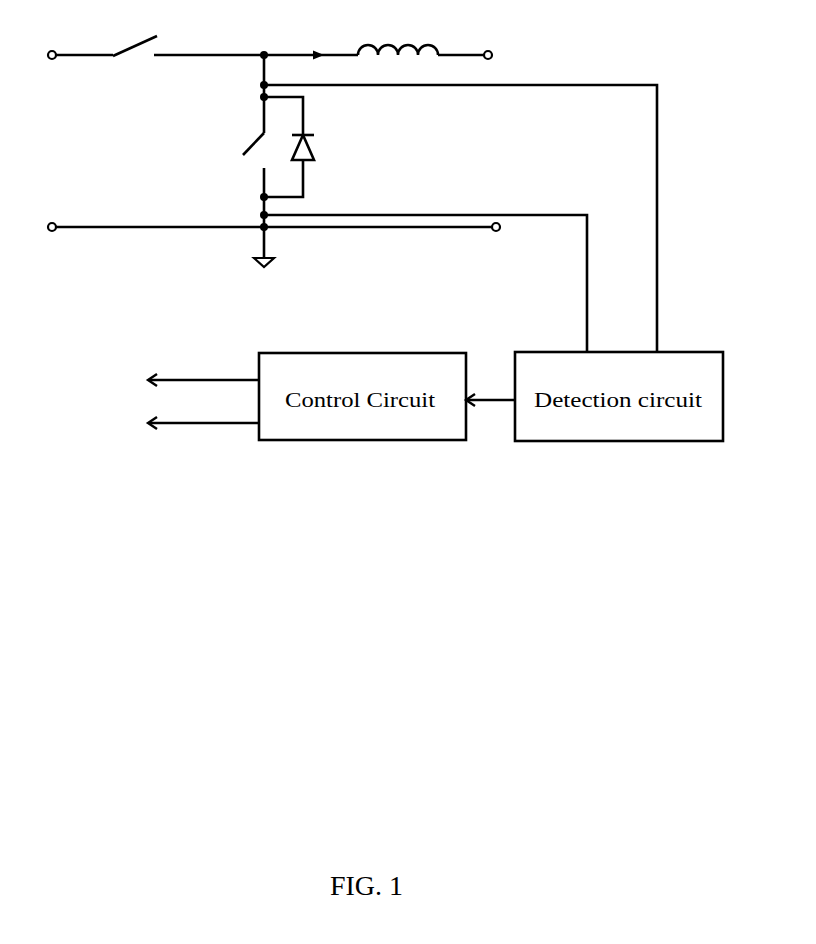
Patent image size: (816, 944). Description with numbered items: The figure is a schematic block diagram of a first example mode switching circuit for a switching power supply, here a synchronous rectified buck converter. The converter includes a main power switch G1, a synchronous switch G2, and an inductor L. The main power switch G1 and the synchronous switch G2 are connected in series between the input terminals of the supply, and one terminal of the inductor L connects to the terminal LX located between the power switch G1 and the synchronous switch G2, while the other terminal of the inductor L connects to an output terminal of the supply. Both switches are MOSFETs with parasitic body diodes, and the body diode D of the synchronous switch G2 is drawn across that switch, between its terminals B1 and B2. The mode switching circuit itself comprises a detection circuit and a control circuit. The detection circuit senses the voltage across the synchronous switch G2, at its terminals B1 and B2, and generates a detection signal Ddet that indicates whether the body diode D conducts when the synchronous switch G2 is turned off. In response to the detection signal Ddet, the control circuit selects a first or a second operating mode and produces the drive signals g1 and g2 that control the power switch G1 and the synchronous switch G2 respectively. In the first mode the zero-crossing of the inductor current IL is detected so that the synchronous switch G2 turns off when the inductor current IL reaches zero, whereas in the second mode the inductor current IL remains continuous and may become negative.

The terminal LX is at (254, 77).
The inductor current IL is at (316, 41).
The inductor L is at (398, 36).
The main power switch G1 is at (135, 64).
The synchronous switch G2 is at (234, 195).
The first terminal of second switch B1 is at (437, 215).
The second terminal of second switch B2 is at (403, 272).
The body diode D is at (300, 147).
The detection signal Ddet is at (490, 387).
The drive signal g1 is at (190, 379).
The drive signal g2 is at (190, 421).